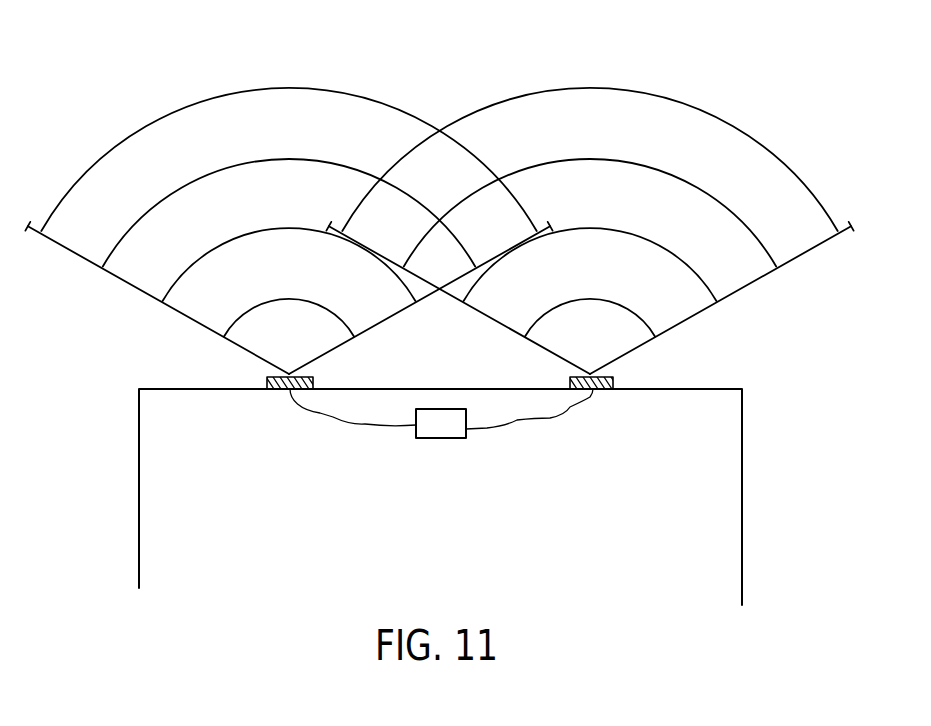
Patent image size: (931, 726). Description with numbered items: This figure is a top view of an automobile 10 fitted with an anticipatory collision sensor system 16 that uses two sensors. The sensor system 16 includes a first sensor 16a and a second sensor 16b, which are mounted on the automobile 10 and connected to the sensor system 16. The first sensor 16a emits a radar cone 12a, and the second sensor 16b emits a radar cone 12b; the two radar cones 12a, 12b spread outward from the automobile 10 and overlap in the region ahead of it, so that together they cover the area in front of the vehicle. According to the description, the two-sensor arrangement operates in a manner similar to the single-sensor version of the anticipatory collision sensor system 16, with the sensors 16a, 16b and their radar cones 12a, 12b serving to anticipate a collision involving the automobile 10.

The automobile 10 is at (606, 514).
The radar cone 12a is at (127, 285).
The radar cone 12b is at (745, 290).
The anticipatory collision sensor system 16 is at (435, 430).
The sensor 16a is at (270, 395).
The sensor 16b is at (603, 392).